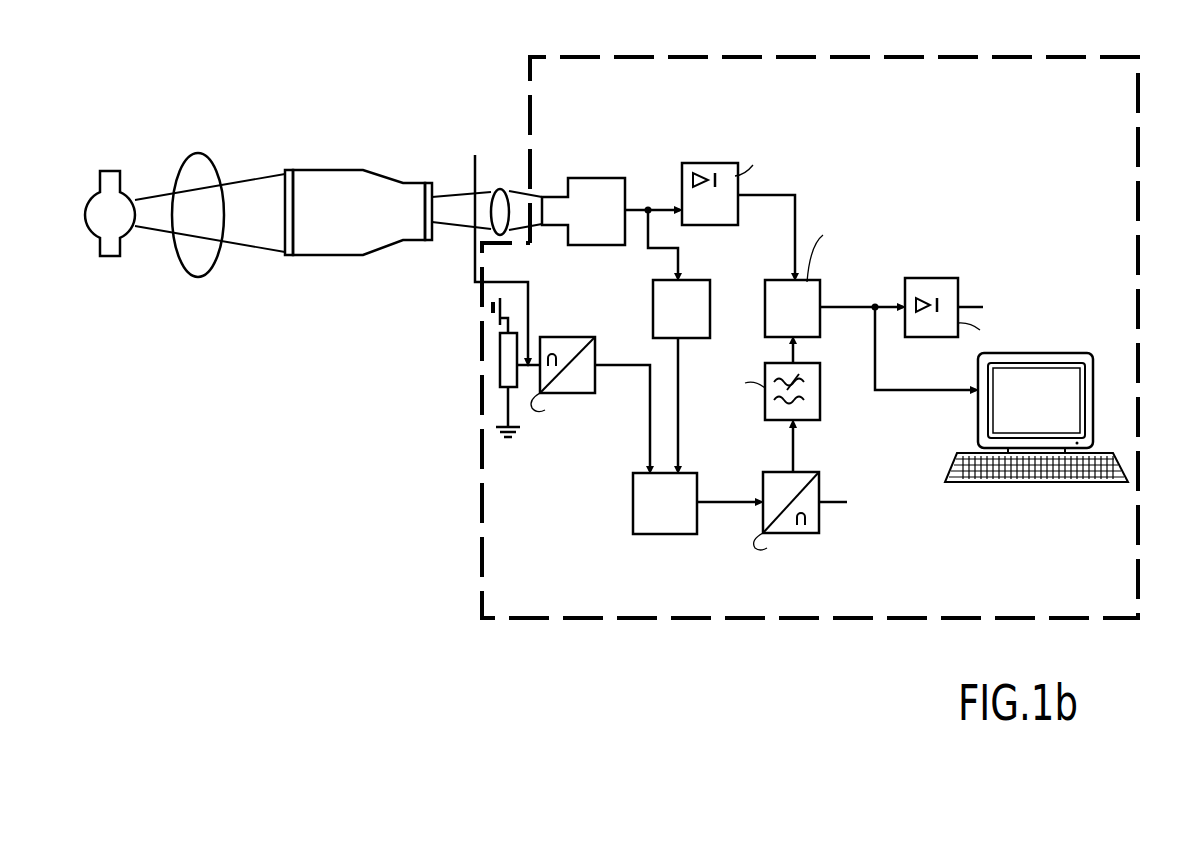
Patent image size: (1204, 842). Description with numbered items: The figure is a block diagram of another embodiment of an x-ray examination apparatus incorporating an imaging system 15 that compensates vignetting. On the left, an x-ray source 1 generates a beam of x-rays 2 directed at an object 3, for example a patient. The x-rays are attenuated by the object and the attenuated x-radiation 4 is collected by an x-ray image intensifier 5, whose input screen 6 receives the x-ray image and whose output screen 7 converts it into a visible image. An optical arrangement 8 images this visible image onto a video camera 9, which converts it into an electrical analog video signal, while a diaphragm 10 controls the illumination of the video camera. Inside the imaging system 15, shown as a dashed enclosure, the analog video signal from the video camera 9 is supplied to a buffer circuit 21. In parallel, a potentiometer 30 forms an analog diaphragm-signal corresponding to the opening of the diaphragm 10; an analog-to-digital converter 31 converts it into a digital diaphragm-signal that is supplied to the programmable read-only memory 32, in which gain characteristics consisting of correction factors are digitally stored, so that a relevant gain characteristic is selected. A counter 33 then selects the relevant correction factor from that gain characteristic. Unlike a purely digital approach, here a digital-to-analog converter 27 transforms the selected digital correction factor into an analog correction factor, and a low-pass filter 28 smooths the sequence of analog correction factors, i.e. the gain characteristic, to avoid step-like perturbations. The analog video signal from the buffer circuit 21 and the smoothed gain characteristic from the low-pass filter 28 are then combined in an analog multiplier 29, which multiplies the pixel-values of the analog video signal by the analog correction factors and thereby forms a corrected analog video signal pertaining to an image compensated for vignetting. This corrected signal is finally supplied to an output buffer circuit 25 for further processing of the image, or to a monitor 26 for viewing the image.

The x-ray source 1 is at (113, 170).
The beam of x-rays 2 is at (155, 217).
The object 3 is at (195, 160).
The attenuated x-radiation 4 is at (248, 230).
The x-ray image intensifier 5 is at (363, 180).
The input screen 6 is at (288, 170).
The output screen 7 is at (427, 182).
The optical arrangement 8 is at (500, 188).
The video camera 9 is at (602, 188).
The diaphragm 10 is at (475, 163).
The imaging system 15 is at (1143, 103).
The buffer circuit 21 is at (710, 162).
The output buffer circuit 25 is at (948, 288).
The monitor 26 is at (1093, 375).
The digital-to-analog converter 27 is at (813, 518).
The low-pass filter 28 is at (807, 410).
The analog multiplier 29 is at (808, 287).
The potentiometer 30 is at (500, 352).
The analog-to-digital converter 31 is at (567, 337).
The programmable read-only memory (PROM) 32 is at (648, 522).
The counter 33 is at (697, 292).